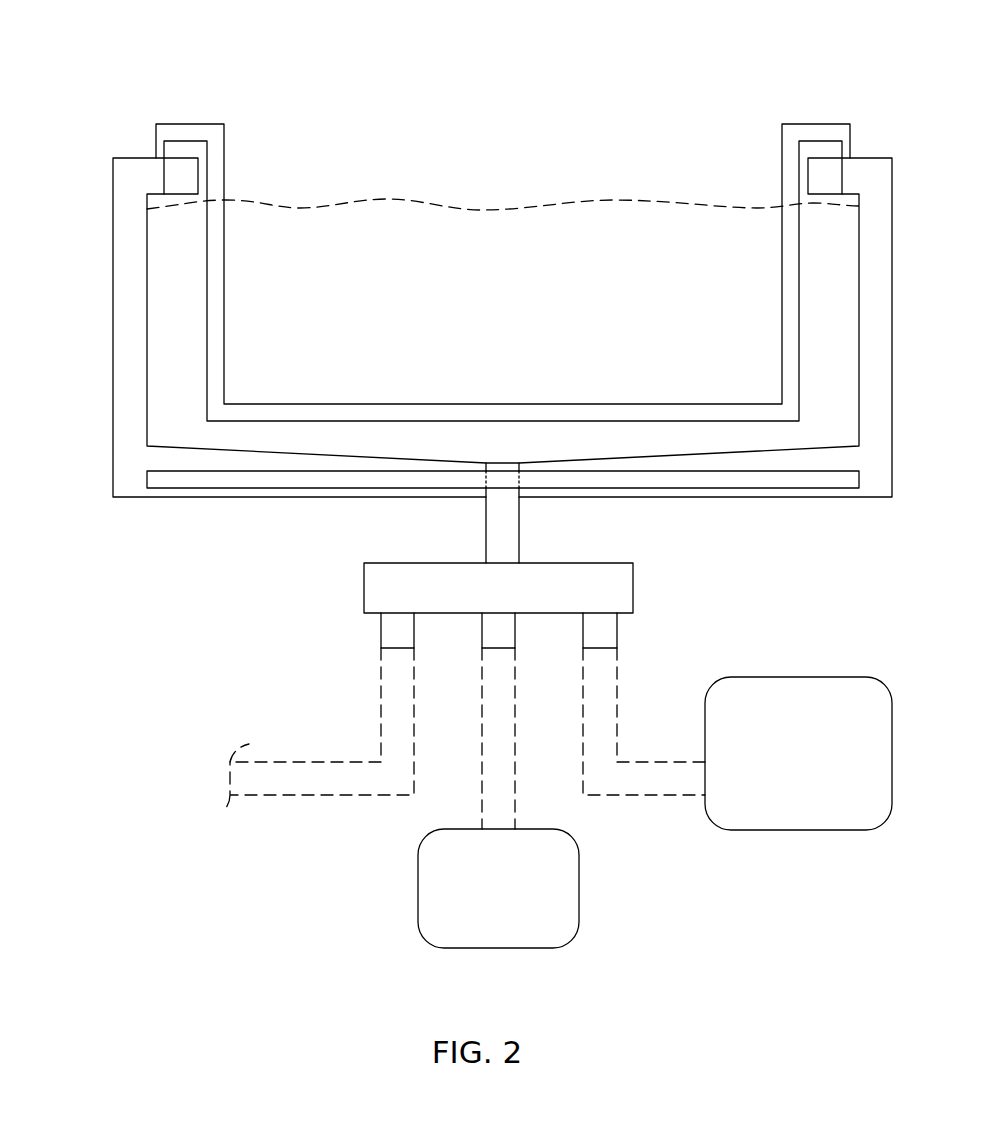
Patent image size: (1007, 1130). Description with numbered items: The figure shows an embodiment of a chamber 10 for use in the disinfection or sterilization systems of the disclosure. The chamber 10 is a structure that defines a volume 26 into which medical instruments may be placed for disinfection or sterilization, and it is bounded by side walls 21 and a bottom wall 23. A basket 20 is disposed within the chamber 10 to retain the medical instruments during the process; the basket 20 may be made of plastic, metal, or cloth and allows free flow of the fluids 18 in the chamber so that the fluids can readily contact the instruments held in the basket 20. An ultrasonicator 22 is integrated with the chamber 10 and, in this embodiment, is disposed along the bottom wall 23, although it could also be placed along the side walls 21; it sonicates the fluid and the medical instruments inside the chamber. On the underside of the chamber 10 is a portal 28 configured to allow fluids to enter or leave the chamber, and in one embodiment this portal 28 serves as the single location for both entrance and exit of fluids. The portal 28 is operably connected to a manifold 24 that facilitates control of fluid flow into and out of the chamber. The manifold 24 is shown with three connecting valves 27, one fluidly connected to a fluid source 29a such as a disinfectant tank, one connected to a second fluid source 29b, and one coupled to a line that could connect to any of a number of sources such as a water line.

The chamber 10 is at (224, 88).
The fluids 18 is at (357, 203).
The basket 20 is at (795, 131).
The side walls 21 is at (131, 342).
The ultrasonicator 22 is at (677, 478).
The bottom wall 23 is at (248, 497).
The manifold 24 is at (406, 580).
The volume 26 is at (498, 292).
The connecting valves 27 is at (393, 635).
The portal 28 is at (502, 463).
The fluid source 29a is at (798, 753).
The fluid source 29b is at (498, 888).